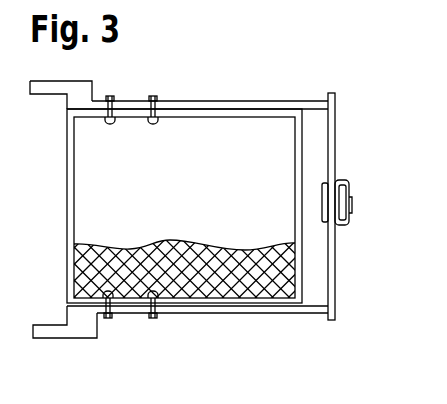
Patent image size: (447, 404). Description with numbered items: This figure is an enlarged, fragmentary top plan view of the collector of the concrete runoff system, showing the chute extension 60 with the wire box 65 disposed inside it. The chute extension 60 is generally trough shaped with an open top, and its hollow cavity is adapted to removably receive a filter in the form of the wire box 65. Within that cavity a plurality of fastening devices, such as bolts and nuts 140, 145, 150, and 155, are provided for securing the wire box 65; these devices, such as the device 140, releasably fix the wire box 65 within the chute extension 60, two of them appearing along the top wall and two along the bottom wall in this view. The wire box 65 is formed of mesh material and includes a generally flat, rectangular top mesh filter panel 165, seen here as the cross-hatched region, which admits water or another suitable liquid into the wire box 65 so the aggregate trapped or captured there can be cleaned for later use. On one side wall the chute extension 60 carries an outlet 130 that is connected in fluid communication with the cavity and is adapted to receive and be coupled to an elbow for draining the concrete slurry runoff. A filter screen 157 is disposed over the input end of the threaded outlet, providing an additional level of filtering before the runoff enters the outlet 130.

The chute extension 60 is at (307, 313).
The wire box 65 is at (307, 122).
The outlet 130 is at (348, 183).
The bolt and nut fastening device 140 is at (155, 320).
The bolt and nut fastening device 145 is at (110, 320).
The bolt and nut fastening device 150 is at (154, 96).
The bolt and nut fastening device 155 is at (112, 96).
The filter screen 157 is at (317, 188).
The top mesh filter panel 165 is at (230, 293).